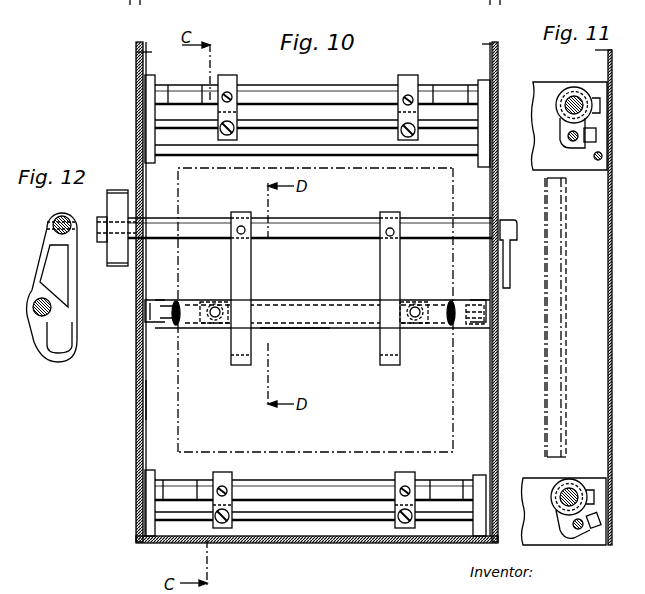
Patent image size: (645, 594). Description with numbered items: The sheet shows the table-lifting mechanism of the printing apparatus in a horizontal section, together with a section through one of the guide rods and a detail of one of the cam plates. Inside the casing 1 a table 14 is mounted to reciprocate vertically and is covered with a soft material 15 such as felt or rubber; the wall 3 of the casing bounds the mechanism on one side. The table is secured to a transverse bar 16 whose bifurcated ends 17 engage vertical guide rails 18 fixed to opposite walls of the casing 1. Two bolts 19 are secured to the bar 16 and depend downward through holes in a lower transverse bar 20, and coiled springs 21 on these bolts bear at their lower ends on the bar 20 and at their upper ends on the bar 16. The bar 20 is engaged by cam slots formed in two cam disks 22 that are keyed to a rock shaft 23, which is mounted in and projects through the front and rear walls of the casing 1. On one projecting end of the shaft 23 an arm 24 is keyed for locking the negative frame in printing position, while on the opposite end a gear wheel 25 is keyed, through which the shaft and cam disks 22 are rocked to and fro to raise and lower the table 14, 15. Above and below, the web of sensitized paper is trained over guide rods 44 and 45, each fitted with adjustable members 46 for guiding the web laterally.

In FIG. 10, the casing 1 is at (500, 196).
In FIG. 10, the side wall 3 is at (136, 400).
In FIG. 10, the table 14 is at (178, 438).
In FIG. 11, the table 14 is at (553, 355).
In FIG. 10, the soft material 15 is at (315, 310).
In FIG. 11, the soft material 15 is at (565, 256).
In FIG. 10, the transverse bar 16 is at (290, 328).
In FIG. 10, the bifurcated ends 17 is at (152, 325).
In FIG. 10, the vertical guide rails 18 is at (160, 298).
In FIG. 10, the bolts 19 is at (216, 318).
In FIG. 10, the transverse bar 20 is at (330, 306).
In FIG. 12, the transverse bar 20 is at (33, 310).
In FIG. 12, the coiled springs 21 is at (56, 342).
In FIG. 10, the cam disks 22 is at (248, 270).
In FIG. 12, the cam disks 22 is at (75, 314).
In FIG. 10, the rock shaft 23 is at (328, 215).
In FIG. 12, the rock shaft 23 is at (54, 221).
In FIG. 10, the arm 24 is at (509, 268).
In FIG. 10, the gear wheel 25 is at (112, 204).
In FIG. 10, the guide rod 44 is at (342, 470).
In FIG. 11, the guide rod 44 is at (566, 497).
In FIG. 10, the guide rod 45 is at (346, 78).
In FIG. 11, the guide rod 45 is at (572, 106).
In FIG. 10, the adjustable members 46 is at (238, 68).
In FIG. 11, the adjustable members 46 is at (582, 92).